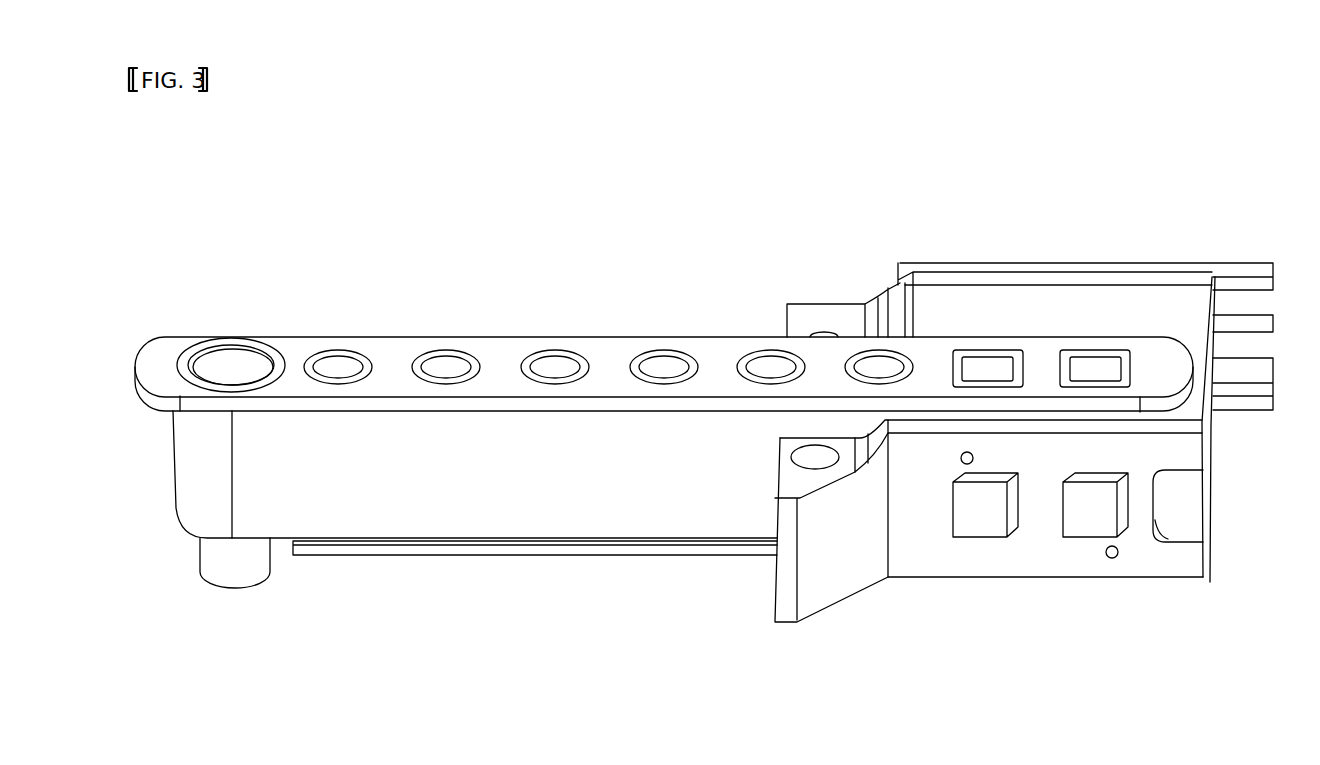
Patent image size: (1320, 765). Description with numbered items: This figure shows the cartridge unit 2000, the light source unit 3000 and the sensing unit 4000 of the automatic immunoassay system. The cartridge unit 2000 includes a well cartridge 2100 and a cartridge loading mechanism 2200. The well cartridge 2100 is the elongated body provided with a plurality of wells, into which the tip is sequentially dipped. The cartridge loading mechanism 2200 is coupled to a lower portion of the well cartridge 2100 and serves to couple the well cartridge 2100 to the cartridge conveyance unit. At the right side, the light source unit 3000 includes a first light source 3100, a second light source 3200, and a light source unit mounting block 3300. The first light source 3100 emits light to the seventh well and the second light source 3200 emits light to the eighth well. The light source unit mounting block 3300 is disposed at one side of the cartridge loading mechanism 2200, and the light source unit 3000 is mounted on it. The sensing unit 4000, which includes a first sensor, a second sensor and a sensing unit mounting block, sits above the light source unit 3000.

The cartridge unit 2000 is at (475, 540).
The well cartridge 2100 is at (385, 448).
The cartridge loading mechanism 2200 is at (328, 616).
The light source unit 3000 is at (989, 552).
The first light source 3100 is at (978, 518).
The second light source 3200 is at (1092, 515).
The light source unit mounting block 3300 is at (1164, 549).
The sensing unit 4000 is at (973, 307).